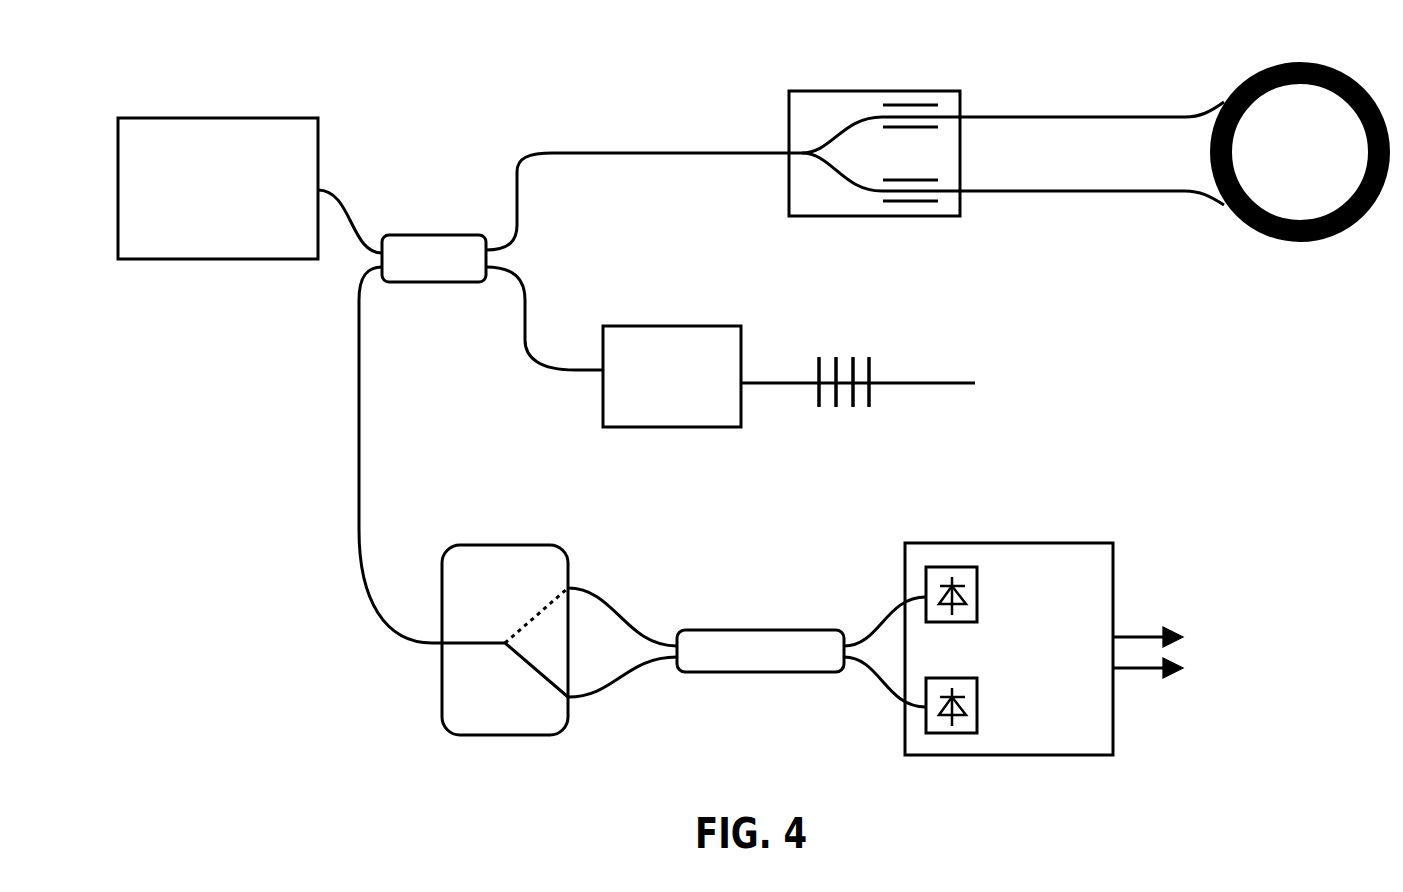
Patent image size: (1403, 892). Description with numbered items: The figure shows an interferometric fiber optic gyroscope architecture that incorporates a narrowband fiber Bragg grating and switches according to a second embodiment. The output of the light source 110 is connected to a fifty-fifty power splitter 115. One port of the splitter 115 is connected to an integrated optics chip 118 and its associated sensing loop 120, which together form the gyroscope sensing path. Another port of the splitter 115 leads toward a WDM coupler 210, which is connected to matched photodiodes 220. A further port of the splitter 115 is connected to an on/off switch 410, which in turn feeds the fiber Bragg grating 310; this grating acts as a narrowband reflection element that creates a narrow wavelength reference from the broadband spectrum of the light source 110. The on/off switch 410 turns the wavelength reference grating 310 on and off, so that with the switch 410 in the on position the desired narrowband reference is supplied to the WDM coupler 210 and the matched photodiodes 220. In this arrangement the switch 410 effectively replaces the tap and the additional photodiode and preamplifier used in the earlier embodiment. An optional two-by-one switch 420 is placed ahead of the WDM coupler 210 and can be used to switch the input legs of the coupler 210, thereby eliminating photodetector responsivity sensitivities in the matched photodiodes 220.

The light source 110 is at (317, 168).
The 50/50 power splitter 115 is at (468, 235).
The integrated optics chip 118 is at (788, 117).
The sensing loop 120 is at (1327, 237).
The on/off switch 410 is at (666, 322).
The fiber Bragg grating 310 is at (872, 372).
The 2×1 switch 420 is at (503, 545).
The WDM coupler 210 is at (752, 676).
The matched photodiodes 220 is at (990, 541).